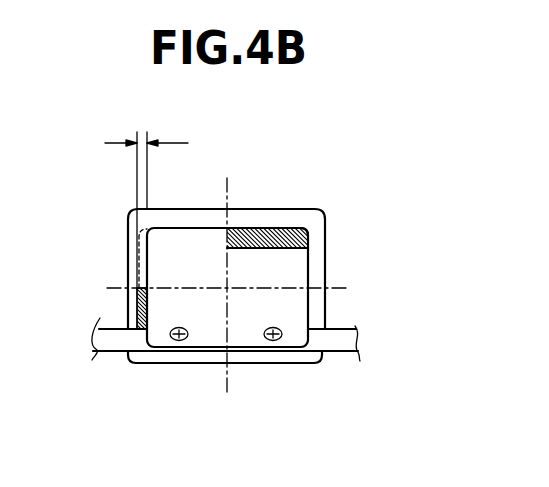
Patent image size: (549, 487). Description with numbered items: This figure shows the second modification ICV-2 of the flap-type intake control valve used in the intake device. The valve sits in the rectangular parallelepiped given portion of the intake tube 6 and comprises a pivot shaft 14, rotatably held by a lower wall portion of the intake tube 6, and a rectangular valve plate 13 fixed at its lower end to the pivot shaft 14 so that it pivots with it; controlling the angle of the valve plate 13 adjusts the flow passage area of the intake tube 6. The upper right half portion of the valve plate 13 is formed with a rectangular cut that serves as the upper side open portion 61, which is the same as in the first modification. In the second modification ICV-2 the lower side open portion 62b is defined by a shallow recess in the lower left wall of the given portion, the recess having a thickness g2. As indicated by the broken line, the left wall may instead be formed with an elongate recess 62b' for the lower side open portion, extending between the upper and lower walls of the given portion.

The intake tube 6 is at (275, 216).
The valve plate 13 is at (190, 270).
The pivot shaft 14 is at (337, 345).
The upper side open portion 61 is at (290, 237).
The lower side open portion 62b is at (115, 305).
The elongate recess 62b' is at (95, 258).
The thickness of the recess g2 is at (137, 154).
The second modification of the intake control valve ICV-2 is at (325, 178).